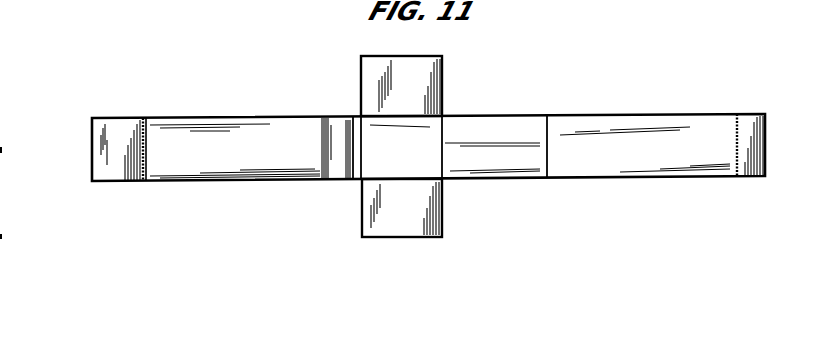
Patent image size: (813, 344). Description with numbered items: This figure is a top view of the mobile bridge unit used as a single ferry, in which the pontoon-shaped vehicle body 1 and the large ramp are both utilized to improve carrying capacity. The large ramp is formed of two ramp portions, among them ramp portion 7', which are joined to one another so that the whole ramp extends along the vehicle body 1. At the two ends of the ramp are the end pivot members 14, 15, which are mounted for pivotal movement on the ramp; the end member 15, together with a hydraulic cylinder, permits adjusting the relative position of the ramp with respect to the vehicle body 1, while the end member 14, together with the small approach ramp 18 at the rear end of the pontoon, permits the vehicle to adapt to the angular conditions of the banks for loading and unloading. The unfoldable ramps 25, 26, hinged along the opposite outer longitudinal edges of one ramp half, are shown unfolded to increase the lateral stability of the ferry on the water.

The vehicle body 1 is at (240, 177).
The small approach ramp 18 is at (108, 117).
The end pivot member 15 is at (339, 120).
The unfoldable ramp 25 is at (432, 83).
The unfoldable ramp 26 is at (362, 208).
The ramp portion 7' is at (632, 109).
The end pivot member 14 is at (758, 138).